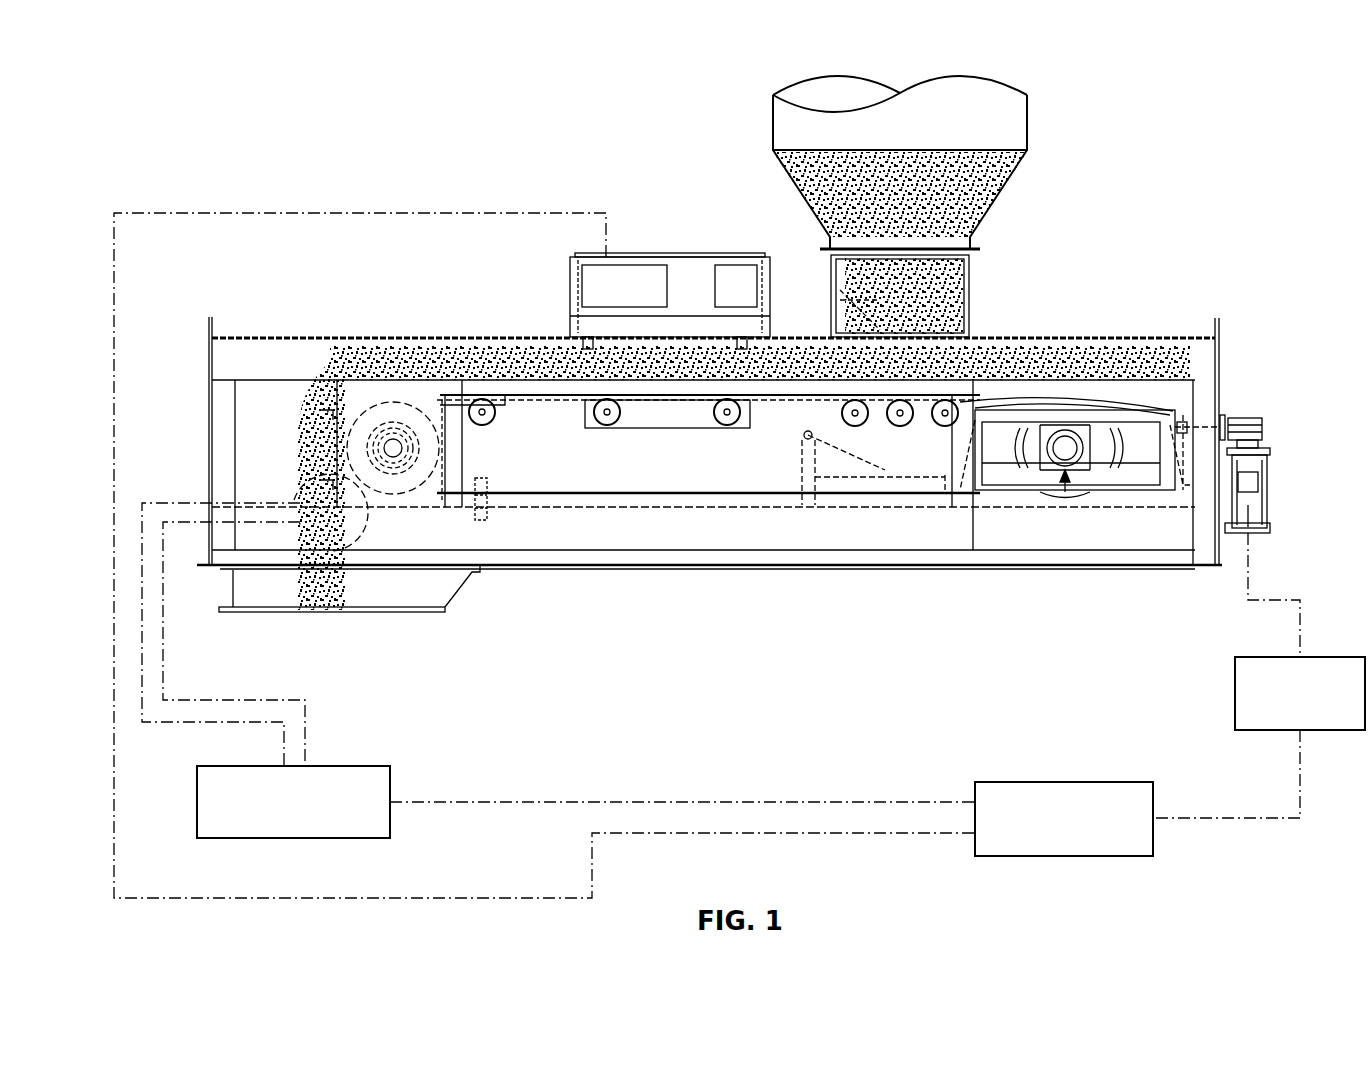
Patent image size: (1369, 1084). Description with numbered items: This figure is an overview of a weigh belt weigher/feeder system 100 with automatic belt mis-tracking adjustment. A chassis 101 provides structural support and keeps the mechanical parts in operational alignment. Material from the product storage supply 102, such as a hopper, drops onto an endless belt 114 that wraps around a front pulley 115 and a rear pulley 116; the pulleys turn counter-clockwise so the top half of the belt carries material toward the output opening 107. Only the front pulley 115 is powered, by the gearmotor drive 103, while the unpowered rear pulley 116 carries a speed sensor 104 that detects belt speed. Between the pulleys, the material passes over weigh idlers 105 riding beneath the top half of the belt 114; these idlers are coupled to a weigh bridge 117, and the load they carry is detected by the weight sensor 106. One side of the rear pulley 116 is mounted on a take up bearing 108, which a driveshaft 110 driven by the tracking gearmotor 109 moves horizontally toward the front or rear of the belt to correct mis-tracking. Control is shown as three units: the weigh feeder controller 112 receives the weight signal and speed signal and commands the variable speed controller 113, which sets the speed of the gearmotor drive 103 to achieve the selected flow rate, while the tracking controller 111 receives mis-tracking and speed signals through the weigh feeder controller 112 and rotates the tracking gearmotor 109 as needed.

The weigh belt weigher/feeder system 100 is at (216, 133).
The chassis 101 is at (395, 338).
The product storage supply 102 is at (1030, 118).
The gearmotor drive 103 is at (368, 545).
The speed sensor 104 is at (1072, 432).
The weigh idlers 105 is at (612, 425).
The weight sensor 106 is at (572, 258).
The output opening 107 is at (233, 592).
The take up bearing 108 is at (1060, 490).
The tracking gearmotor 109 is at (1273, 455).
The driveshaft 110 is at (1222, 404).
The tracking controller 111 is at (1295, 657).
The weigh feeder controller 112 is at (1040, 782).
The variable speed controller 113 is at (262, 766).
The belt 114 is at (537, 397).
The front pulley 115 is at (443, 503).
The rear pulley 116 is at (1058, 402).
The weigh bridge 117 is at (765, 398).